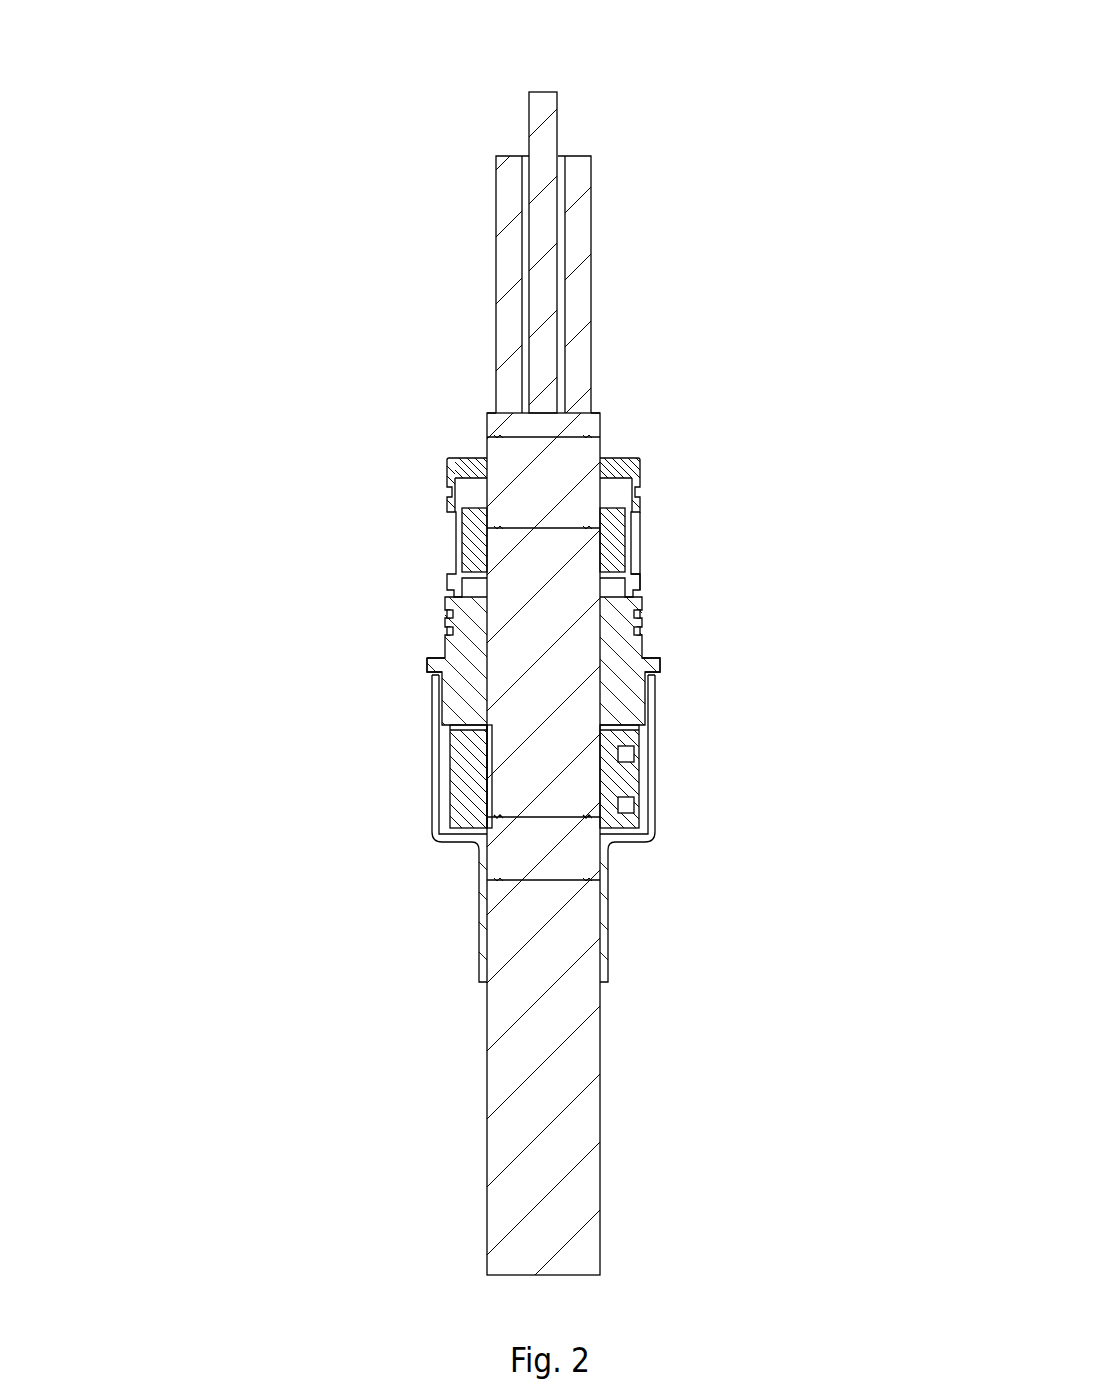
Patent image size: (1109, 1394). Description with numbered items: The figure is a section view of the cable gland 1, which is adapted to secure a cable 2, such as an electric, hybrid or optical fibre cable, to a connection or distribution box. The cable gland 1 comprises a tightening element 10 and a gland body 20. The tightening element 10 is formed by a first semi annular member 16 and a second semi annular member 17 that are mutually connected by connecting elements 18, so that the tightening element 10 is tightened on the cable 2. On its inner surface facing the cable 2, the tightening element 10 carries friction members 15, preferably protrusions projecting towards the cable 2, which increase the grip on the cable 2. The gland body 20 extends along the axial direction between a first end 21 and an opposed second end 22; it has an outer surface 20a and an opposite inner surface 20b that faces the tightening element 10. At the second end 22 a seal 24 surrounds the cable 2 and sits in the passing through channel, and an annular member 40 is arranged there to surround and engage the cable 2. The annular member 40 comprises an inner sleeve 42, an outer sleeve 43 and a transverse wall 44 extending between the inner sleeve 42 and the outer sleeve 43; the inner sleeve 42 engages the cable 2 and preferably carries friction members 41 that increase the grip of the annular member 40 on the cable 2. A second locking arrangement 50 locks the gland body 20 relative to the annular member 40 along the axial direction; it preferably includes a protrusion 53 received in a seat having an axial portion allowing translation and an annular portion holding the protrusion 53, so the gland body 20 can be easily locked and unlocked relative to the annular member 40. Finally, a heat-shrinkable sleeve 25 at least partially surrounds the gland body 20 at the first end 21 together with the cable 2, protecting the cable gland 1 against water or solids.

The cable gland 1 is at (232, 136).
The cable 2 is at (550, 1190).
The tightening element 10 is at (455, 801).
The friction members 15 is at (490, 767).
The first semi annular member 16 is at (452, 765).
The second semi annular member 17 is at (452, 765).
The connecting elements 18 is at (623, 754).
The gland body 20 is at (410, 713).
The outer surface 20a is at (432, 690).
The inner surface 20b is at (450, 747).
The first end 21 is at (652, 832).
The second end 22 is at (477, 470).
The seal 24 is at (470, 540).
The heat-shrinkable sleeve 25 is at (477, 920).
The annular member 40 is at (459, 448).
The friction members 41 is at (487, 468).
The inner sleeve 42 is at (600, 466).
The outer sleeve 43 is at (447, 470).
The transverse wall 44 is at (605, 462).
The second locking arrangement 50 is at (660, 470).
The protrusion 53 is at (636, 487).